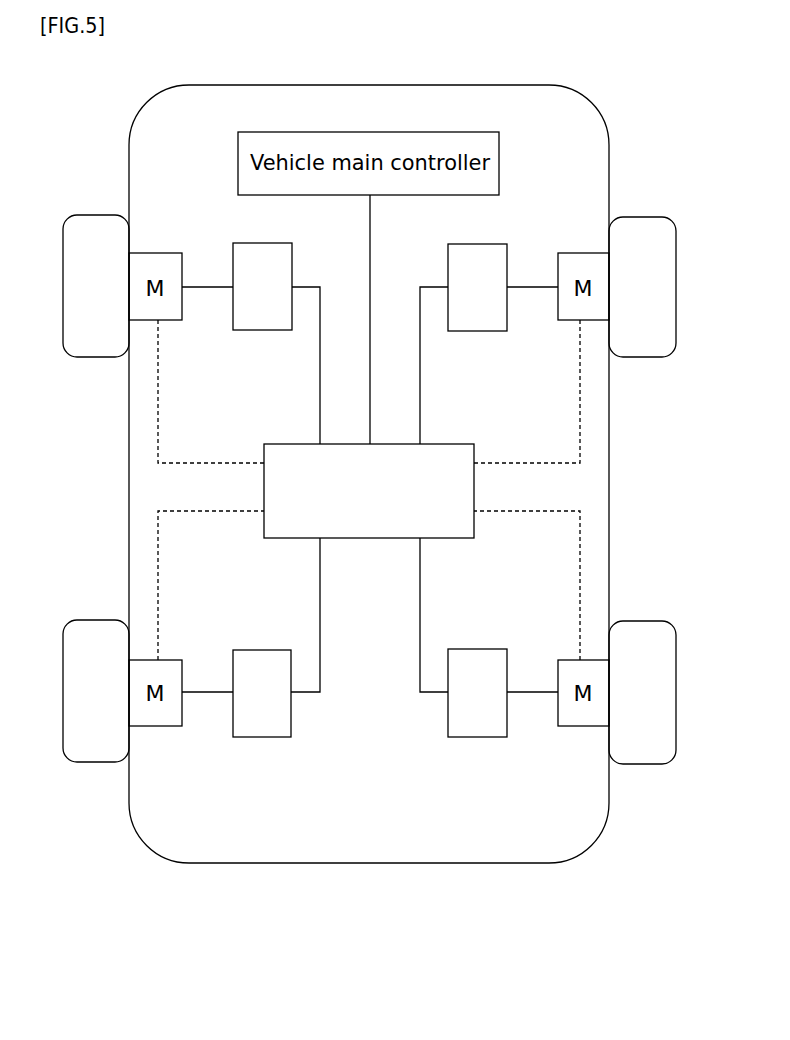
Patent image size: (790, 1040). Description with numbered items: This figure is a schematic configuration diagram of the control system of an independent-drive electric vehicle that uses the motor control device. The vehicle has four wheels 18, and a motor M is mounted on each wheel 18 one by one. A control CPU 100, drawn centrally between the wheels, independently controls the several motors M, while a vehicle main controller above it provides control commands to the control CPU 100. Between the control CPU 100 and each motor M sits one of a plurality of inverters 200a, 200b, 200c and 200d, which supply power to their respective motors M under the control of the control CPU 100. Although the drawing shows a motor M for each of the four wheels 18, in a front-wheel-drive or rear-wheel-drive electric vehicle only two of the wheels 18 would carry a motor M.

The wheel 18 is at (100, 215).
The control CPU 100 is at (369, 491).
The inverter 200a is at (260, 331).
The inverter 200b is at (478, 331).
The inverter 200c is at (260, 737).
The inverter 200d is at (477, 737).